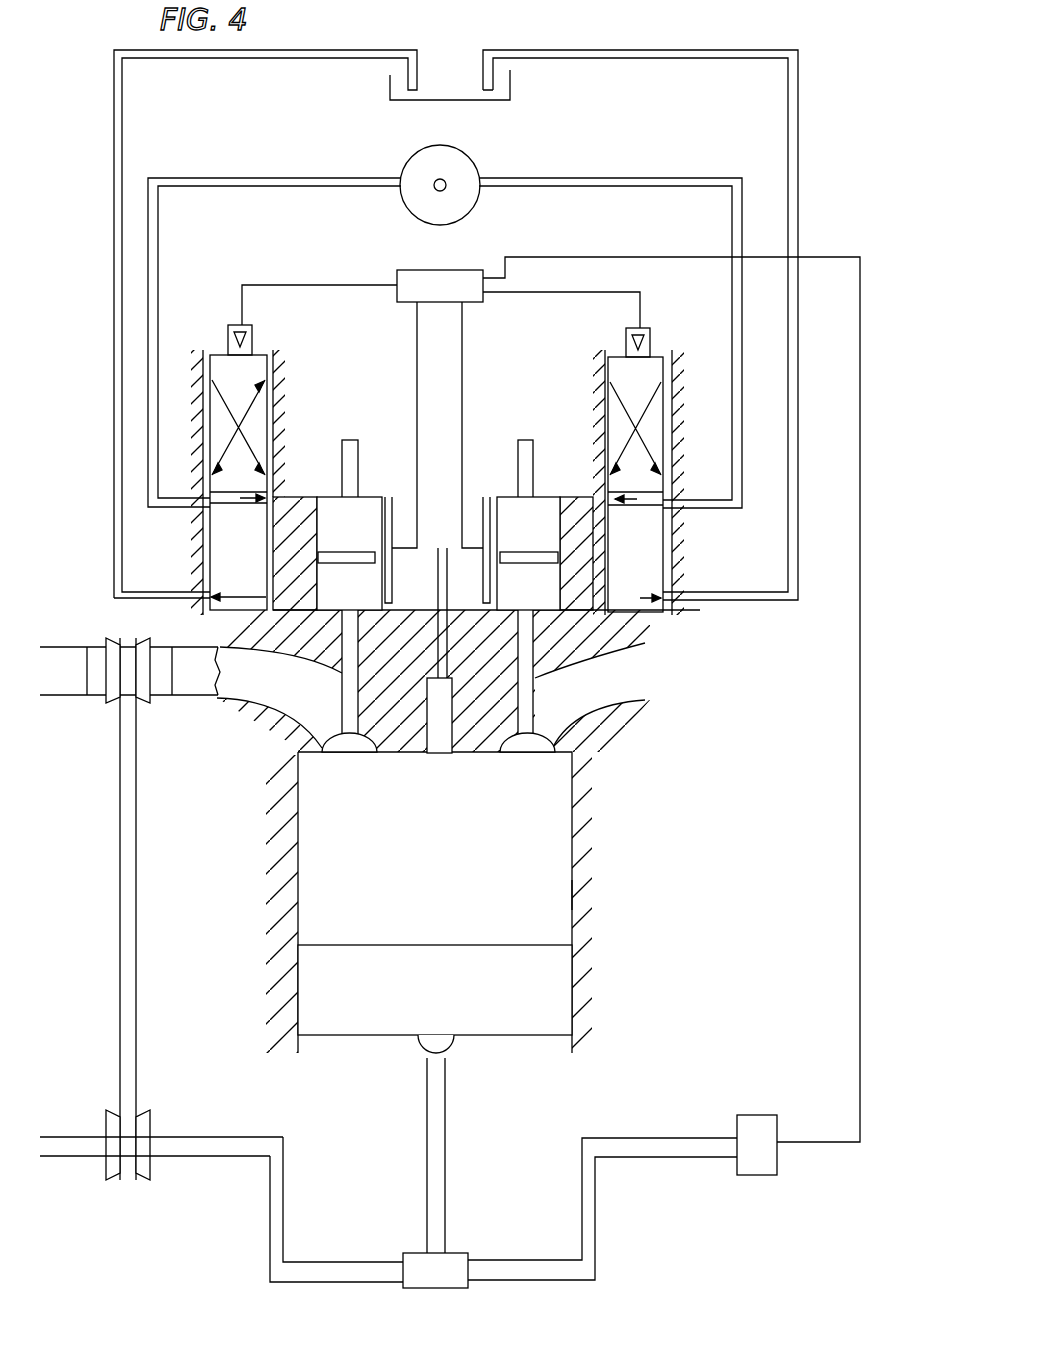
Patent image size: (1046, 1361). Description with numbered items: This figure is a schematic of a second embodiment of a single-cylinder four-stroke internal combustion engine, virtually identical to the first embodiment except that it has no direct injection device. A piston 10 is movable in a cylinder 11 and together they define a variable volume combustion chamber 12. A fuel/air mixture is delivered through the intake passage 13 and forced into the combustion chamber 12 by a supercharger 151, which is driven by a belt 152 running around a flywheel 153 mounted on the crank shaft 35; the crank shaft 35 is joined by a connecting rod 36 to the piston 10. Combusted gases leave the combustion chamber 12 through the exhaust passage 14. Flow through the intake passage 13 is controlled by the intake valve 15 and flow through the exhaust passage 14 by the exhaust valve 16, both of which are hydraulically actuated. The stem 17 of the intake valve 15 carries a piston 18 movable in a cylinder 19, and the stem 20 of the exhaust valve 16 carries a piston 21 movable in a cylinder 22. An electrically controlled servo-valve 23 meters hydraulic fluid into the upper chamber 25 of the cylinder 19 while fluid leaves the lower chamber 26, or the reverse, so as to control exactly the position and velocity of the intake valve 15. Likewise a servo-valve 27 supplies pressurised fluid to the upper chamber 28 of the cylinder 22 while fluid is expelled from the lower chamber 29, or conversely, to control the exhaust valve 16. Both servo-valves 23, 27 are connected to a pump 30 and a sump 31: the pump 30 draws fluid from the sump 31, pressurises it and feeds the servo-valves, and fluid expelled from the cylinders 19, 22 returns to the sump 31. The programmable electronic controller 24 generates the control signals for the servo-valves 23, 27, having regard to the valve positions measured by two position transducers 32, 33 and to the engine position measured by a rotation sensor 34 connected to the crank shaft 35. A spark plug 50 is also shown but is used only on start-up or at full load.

The piston 10 is at (530, 1007).
The cylinder 11 is at (573, 895).
The combustion chamber 12 is at (530, 880).
The intake passage 13 is at (272, 705).
The exhaust passage 14 is at (592, 706).
The intake valve 15 is at (300, 765).
The exhaust valve 16 is at (560, 762).
The stem 17 is at (349, 440).
The piston 18 is at (362, 622).
The cylinder 19 is at (380, 600).
The stem 20 is at (525, 440).
The piston 21 is at (562, 562).
The cylinder 22 is at (600, 648).
The servo-valve 23 is at (232, 362).
The electronic controller 24 is at (432, 270).
The upper chamber 25 is at (328, 497).
The lower chamber 26 is at (292, 662).
The servo-valve 27 is at (652, 368).
The upper chamber 28 is at (548, 497).
The lower chamber 29 is at (474, 612).
The pump 30 is at (425, 170).
The sump 31 is at (390, 88).
The position transducer 32 is at (392, 497).
The position transducer 33 is at (484, 497).
The rotation sensor 34 is at (757, 1115).
The crank shaft 35 is at (672, 1137).
The connecting rod 36 is at (427, 1118).
The spark plug 50 is at (442, 760).
The supercharger 151 is at (112, 700).
The belt 152 is at (138, 898).
The flywheel 153 is at (140, 1175).